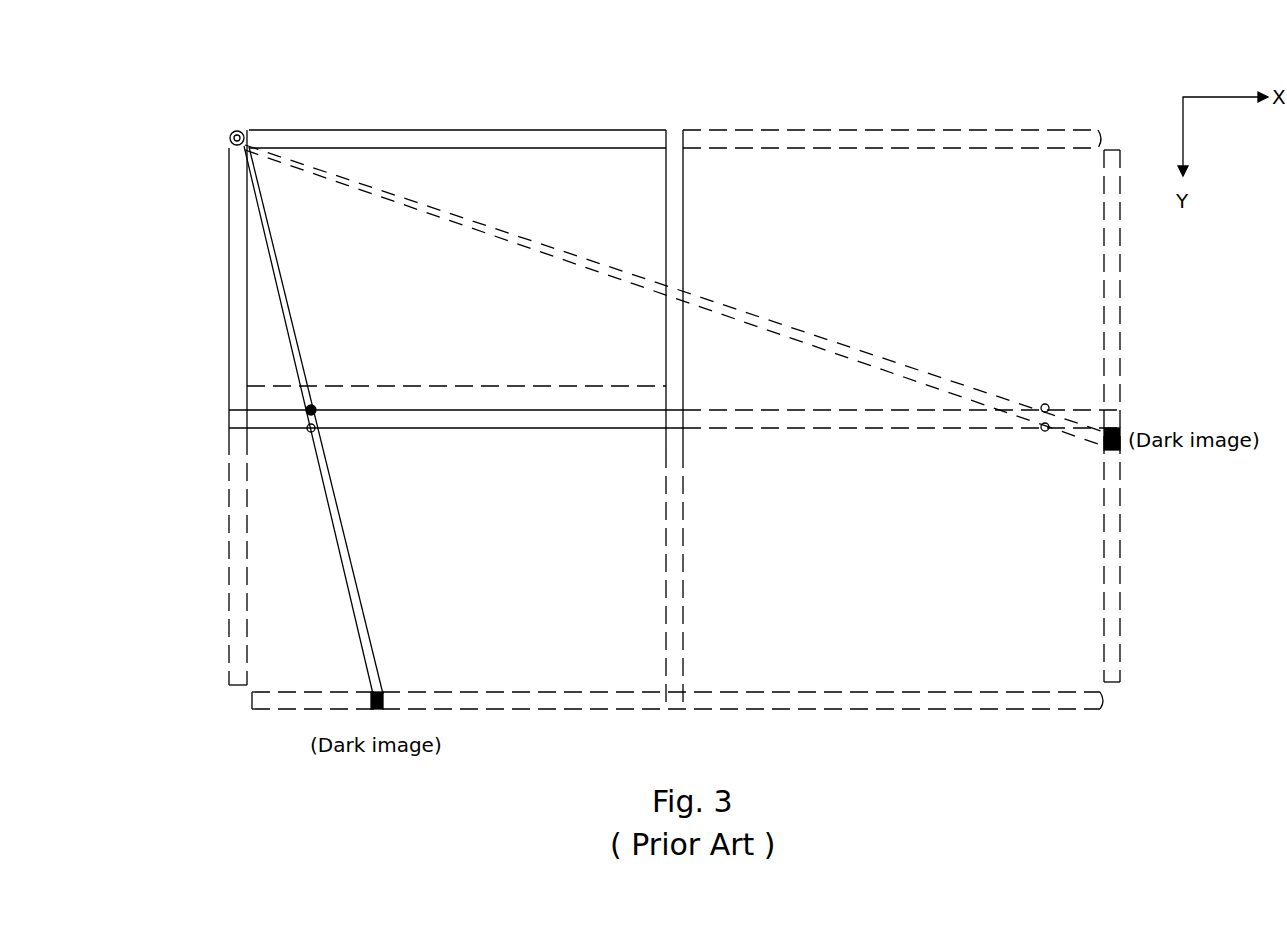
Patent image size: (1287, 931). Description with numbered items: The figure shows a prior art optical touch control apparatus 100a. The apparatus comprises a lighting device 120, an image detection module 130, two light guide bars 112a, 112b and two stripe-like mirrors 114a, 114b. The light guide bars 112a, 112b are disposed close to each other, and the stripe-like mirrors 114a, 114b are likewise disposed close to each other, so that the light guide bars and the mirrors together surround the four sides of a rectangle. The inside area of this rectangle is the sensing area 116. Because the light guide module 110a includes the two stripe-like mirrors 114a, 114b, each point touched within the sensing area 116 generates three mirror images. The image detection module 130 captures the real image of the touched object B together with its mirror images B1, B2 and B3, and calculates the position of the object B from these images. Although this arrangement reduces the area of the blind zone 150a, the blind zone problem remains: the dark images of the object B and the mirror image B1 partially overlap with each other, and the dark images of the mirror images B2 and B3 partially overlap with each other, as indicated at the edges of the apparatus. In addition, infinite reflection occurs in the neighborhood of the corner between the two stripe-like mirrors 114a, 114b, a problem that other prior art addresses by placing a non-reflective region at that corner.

The optical touch control apparatus 100a is at (1235, 716).
The light guide module 110a is at (636, 126).
The light guide bar 112a is at (232, 269).
The light guide bar 112b is at (527, 138).
The stripe-like mirror 114a is at (232, 416).
The stripe-like mirror 114b is at (677, 189).
The sensing area 116 is at (436, 176).
The lighting device 120 is at (234, 130).
The image detection module 130 is at (231, 144).
The blind zone 150a is at (254, 397).
The object B is at (318, 404).
The mirror image B1 is at (304, 438).
The mirror image B2 is at (1045, 400).
The mirror image B3 is at (1045, 435).